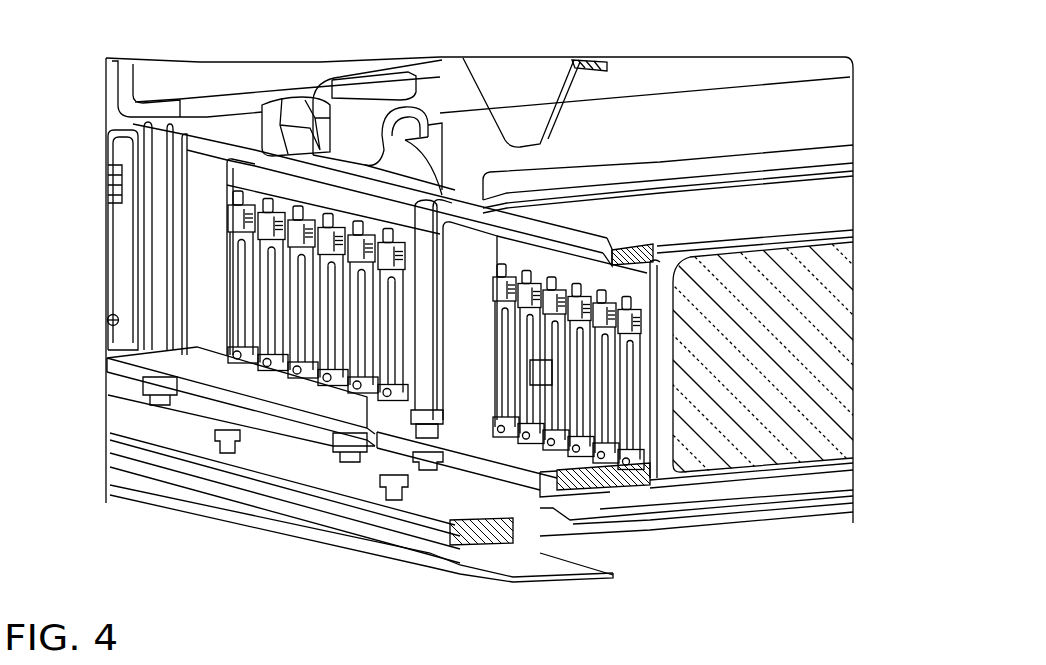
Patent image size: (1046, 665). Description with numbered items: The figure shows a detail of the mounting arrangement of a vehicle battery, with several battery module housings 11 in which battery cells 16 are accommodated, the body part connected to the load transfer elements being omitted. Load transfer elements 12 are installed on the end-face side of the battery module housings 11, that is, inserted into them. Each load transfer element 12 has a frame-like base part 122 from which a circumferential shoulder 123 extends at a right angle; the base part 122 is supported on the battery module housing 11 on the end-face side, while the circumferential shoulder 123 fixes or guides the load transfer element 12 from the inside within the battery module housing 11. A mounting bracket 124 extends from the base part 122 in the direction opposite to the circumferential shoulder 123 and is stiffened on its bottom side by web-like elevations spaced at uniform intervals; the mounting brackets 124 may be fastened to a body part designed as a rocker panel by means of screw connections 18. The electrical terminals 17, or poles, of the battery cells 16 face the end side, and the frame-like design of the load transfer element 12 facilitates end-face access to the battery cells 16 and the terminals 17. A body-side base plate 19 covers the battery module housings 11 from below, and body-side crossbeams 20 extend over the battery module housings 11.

The battery module housing 11 is at (157, 131).
The load transfer element 12 is at (198, 248).
The battery cell 16 is at (758, 353).
The terminal 17 is at (538, 370).
The screw connection 18 is at (422, 425).
The base plate 19 is at (778, 494).
The crossbeam 20 is at (757, 112).
The base part 122 is at (557, 242).
The circumferential shoulder 123 is at (628, 258).
The mounting bracket 124 is at (242, 378).